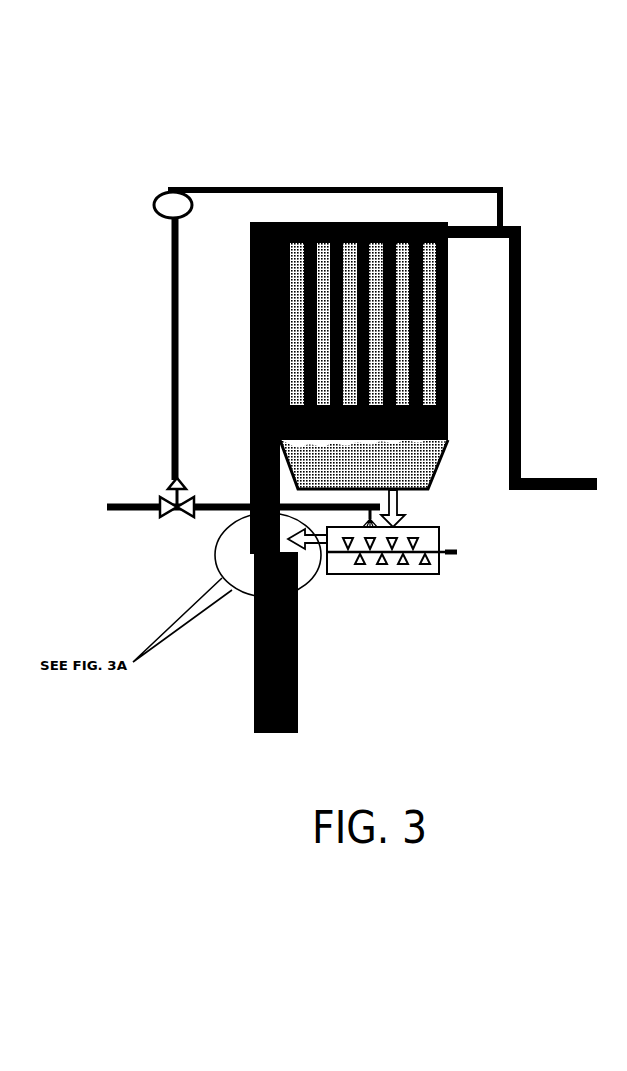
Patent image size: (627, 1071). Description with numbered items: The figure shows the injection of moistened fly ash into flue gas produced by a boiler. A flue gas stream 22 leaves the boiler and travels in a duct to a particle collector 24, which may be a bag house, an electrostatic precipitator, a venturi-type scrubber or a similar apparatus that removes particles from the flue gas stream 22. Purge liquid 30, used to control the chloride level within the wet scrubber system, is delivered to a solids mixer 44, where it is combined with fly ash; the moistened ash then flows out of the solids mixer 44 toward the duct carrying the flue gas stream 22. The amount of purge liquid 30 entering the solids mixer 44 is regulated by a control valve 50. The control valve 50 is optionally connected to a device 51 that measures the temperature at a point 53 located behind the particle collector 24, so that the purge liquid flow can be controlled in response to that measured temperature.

The flue gas stream 22 is at (253, 672).
The particle collector 24 is at (360, 222).
The purge liquid 30 is at (130, 503).
The solids mixer 44 is at (375, 574).
The control valve 50 is at (173, 512).
The device 51 is at (163, 192).
The point 53 is at (505, 222).